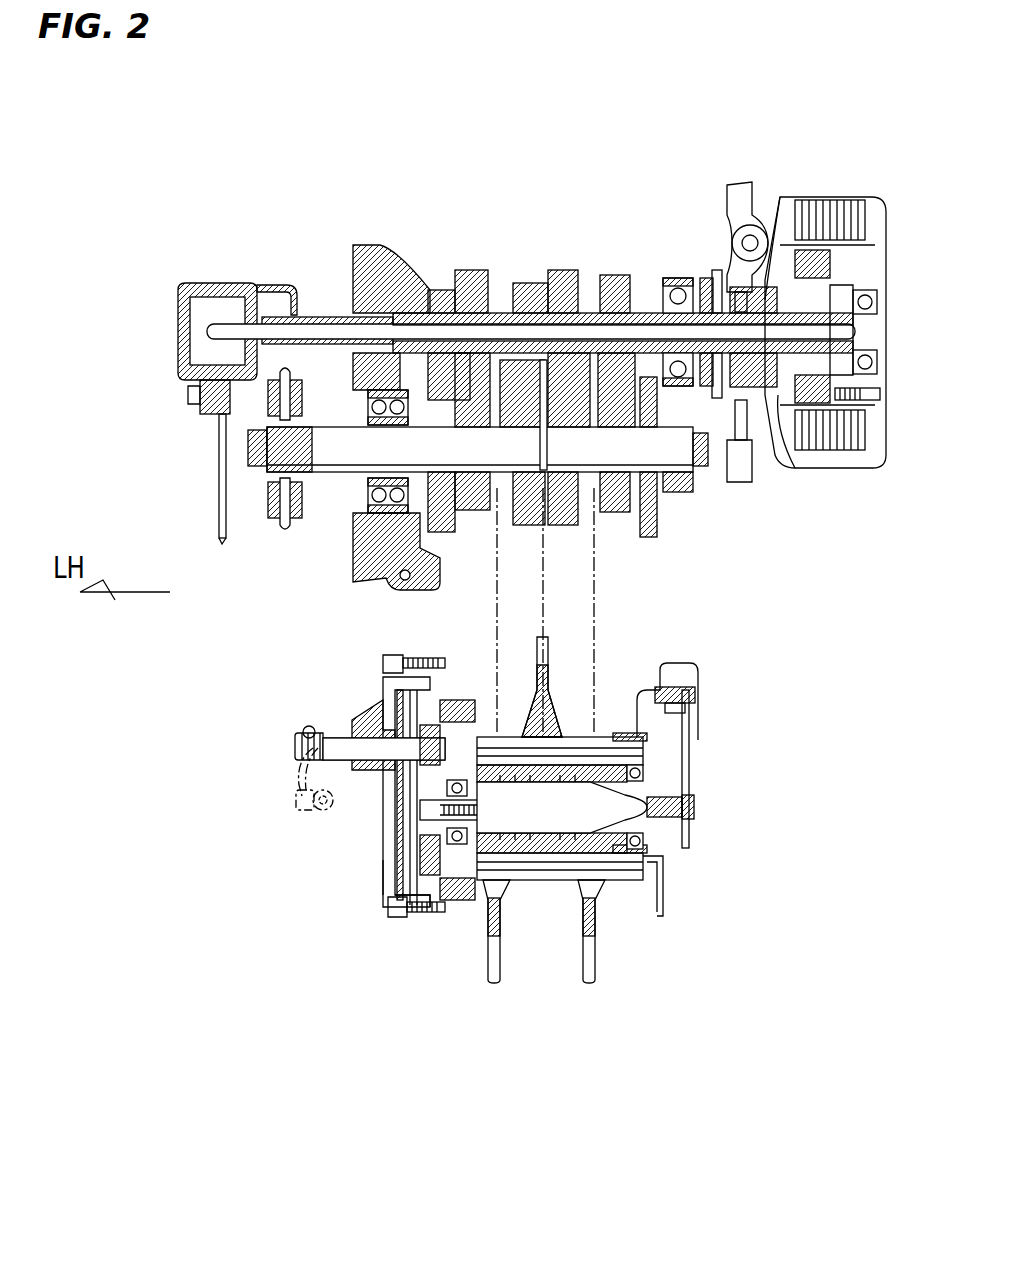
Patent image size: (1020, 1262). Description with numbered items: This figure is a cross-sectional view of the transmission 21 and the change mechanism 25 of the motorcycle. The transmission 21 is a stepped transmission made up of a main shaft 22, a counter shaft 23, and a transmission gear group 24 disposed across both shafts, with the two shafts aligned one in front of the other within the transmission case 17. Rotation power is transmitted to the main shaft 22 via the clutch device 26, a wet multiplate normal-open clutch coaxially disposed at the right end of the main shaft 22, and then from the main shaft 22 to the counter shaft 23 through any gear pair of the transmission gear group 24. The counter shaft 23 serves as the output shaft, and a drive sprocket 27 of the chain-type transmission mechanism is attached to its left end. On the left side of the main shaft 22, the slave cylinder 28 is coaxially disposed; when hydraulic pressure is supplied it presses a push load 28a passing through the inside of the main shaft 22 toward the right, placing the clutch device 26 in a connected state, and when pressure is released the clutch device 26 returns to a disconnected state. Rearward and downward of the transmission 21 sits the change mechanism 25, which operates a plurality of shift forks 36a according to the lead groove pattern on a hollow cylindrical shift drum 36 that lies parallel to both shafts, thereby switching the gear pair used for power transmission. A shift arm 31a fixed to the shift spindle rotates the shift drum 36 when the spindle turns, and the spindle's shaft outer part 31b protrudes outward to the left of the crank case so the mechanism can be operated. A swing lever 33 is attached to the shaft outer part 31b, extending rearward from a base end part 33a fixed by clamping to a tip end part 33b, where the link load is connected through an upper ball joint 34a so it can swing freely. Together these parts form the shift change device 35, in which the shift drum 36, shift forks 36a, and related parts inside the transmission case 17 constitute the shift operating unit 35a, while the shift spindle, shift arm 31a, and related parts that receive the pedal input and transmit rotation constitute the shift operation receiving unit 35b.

The transmission case 17 is at (352, 265).
The transmission 21 is at (433, 155).
The main shaft 22 is at (585, 318).
The counter shaft 23 is at (476, 452).
The transmission gear group 24 is at (556, 275).
The change mechanism 25 is at (262, 697).
The clutch device 26 is at (818, 190).
The drive sprocket 27 is at (288, 530).
The slave cylinder 28 is at (182, 287).
The push load 28a is at (503, 328).
The shift arm 31a is at (410, 822).
The shaft outer part 31b is at (338, 742).
The swing lever 33 is at (295, 775).
The base end part 33a is at (302, 733).
The tip end part 33b is at (300, 810).
The upper ball joint 34a is at (322, 807).
The shift change device 35 is at (378, 1065).
The shift operating unit 35a is at (410, 950).
The shift operation receiving unit 35b is at (335, 868).
The shift drum 36 is at (588, 767).
The shift fork 36a is at (547, 678).